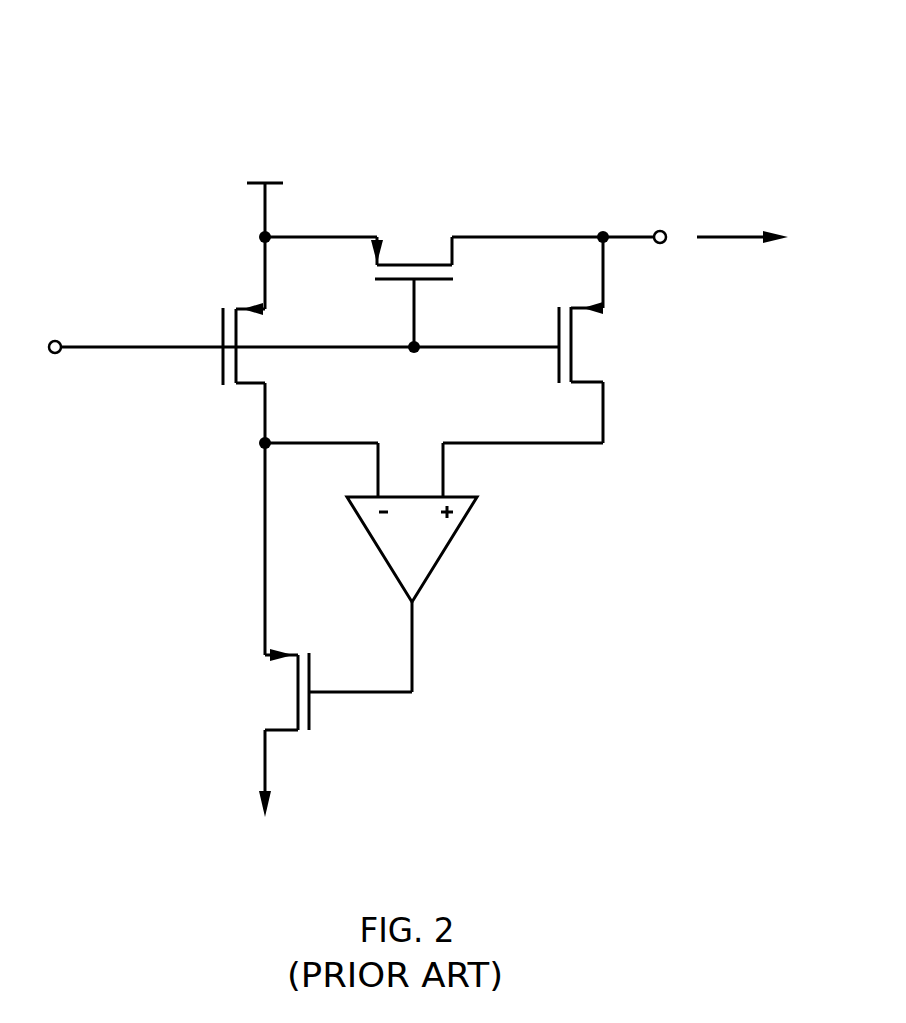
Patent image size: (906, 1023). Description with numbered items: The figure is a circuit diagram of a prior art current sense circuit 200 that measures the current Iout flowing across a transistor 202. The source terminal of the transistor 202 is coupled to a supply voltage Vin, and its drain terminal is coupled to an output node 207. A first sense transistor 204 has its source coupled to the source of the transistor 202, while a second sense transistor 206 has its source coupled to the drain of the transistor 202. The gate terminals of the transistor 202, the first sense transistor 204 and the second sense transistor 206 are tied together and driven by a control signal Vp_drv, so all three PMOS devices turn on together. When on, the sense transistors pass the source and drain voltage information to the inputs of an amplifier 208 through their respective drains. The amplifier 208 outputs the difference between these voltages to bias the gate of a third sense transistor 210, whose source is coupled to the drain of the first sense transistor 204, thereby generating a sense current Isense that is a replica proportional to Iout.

The current sense circuit 200 is at (90, 90).
The transistor 202 is at (415, 237).
The first sense transistor 204 is at (222, 323).
The second sense transistor 206 is at (559, 320).
The output node 207 is at (660, 231).
The amplifier 208 is at (423, 495).
The third sense transistor 210 is at (311, 670).